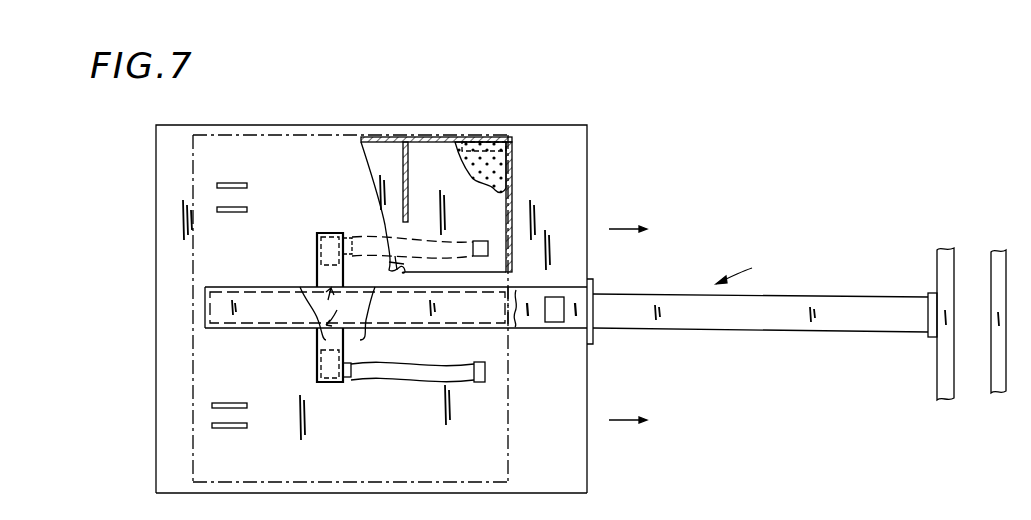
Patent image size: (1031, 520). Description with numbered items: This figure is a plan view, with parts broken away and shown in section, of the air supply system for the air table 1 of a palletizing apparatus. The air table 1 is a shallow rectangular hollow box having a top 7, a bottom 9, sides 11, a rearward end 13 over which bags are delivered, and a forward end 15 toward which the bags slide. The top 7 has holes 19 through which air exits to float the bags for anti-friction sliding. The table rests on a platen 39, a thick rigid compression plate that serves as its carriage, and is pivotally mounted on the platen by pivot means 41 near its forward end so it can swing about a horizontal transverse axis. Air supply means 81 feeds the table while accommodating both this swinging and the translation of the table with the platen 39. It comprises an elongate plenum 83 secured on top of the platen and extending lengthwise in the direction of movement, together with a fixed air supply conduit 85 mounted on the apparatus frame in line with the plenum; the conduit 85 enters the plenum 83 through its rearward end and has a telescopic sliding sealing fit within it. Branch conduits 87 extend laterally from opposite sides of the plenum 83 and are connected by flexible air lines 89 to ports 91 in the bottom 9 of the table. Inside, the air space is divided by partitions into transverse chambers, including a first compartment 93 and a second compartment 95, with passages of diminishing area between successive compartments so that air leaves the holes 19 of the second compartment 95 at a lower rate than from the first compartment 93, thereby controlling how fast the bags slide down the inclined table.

The air table 1 is at (192, 158).
The top 7 is at (300, 150).
The bottom 9 is at (490, 215).
The sides 11 is at (438, 137).
The rearward end 13 is at (509, 425).
The forward end 15 is at (192, 394).
The holes 19 is at (492, 158).
The platen 39 is at (566, 486).
The pivot means 41 is at (234, 183).
The air supply means 81 is at (748, 267).
The plenum 83 is at (250, 295).
The fixed air supply conduit 85 is at (770, 332).
The branch conduits 87 is at (317, 240).
The flexible air lines 89 is at (355, 244).
The ports 91 is at (488, 248).
The first compartment 93 is at (420, 152).
The second compartment 95 is at (386, 160).